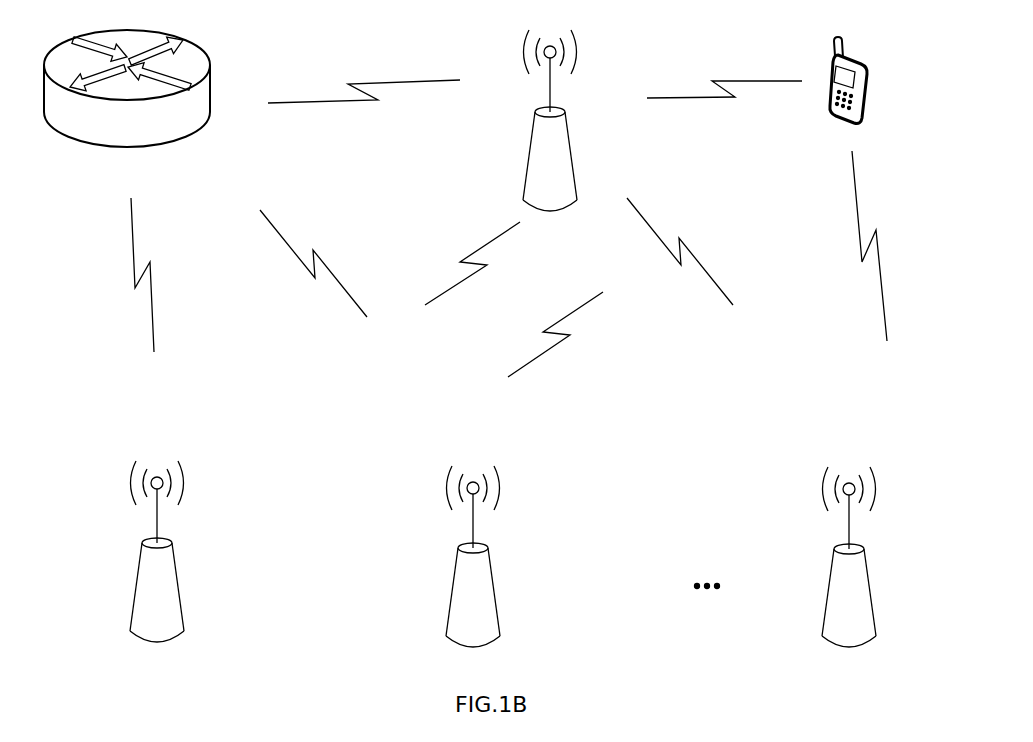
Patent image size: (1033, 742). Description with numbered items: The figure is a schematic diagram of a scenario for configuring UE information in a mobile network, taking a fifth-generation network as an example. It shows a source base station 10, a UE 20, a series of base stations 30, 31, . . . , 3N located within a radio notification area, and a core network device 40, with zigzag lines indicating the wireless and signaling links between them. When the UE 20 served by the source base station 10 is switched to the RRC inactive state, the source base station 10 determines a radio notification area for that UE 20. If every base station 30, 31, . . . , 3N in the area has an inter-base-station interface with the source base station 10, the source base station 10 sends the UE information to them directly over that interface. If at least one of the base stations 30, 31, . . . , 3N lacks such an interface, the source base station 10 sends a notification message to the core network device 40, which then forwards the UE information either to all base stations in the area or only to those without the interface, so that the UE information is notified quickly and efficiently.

The source base station 10 is at (576, 62).
The UE 20 is at (868, 75).
The base station within a radio notification area 30 is at (170, 508).
The base station within a radio notification area 31 is at (487, 512).
The base station within a radio notification area 3N is at (878, 498).
The core network device 40 is at (212, 88).